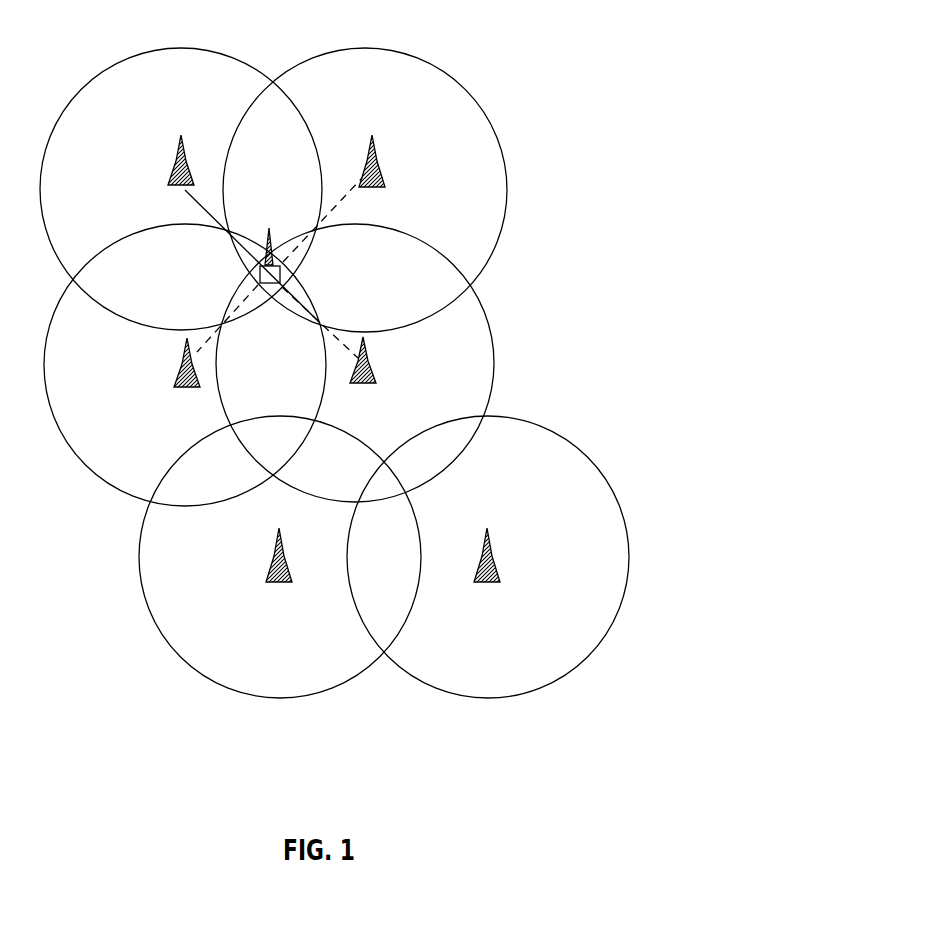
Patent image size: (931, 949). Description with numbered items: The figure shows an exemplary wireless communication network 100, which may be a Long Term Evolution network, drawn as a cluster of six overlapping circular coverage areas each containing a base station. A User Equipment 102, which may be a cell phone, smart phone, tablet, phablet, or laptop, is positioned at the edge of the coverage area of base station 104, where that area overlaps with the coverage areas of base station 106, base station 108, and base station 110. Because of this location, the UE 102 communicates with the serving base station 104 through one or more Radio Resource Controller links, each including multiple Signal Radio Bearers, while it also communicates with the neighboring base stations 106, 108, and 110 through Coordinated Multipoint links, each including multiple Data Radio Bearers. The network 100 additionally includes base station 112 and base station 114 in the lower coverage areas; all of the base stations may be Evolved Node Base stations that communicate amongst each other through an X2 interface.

The wireless communication network 100 is at (572, 40).
The User Equipment (UE) 102 is at (268, 258).
The Base Station (BS) 104 is at (188, 146).
The Base Station (BS) 106 is at (387, 180).
The Base Station (BS) 108 is at (378, 378).
The Base Station (BS) 110 is at (173, 377).
The Base Station (BS) 112 is at (500, 575).
The Base Station (BS) 114 is at (267, 575).